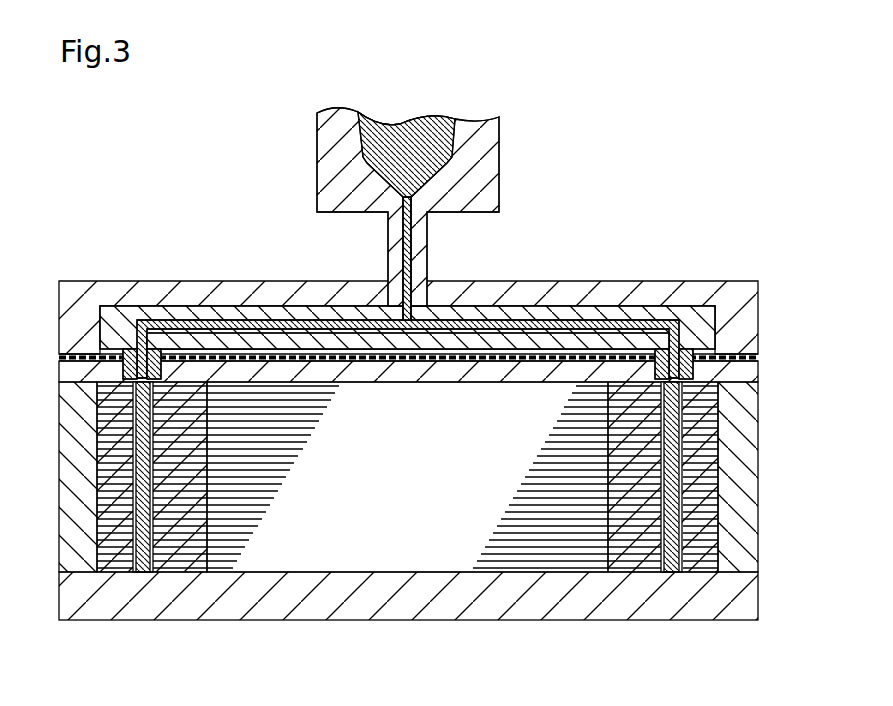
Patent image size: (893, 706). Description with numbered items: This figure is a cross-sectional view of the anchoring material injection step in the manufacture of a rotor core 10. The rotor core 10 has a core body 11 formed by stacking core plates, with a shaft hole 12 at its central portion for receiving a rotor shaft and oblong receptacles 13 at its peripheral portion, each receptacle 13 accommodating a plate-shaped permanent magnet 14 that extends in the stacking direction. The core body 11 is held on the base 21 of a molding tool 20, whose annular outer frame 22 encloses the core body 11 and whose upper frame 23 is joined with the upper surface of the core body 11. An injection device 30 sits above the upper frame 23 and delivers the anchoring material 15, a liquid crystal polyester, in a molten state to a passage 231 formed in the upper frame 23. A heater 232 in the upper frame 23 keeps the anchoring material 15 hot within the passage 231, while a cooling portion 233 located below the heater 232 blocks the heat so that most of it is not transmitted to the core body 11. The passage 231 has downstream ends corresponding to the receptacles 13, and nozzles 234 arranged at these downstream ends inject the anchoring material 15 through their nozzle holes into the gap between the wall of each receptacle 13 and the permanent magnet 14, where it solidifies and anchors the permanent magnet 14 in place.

The rotor core 10 is at (521, 582).
The core body 11 is at (724, 416).
The shaft hole 12 is at (212, 550).
The receptacle 13 is at (130, 396).
The permanent magnet 14 is at (142, 563).
The anchoring material 15 is at (414, 121).
The molding tool 20 is at (297, 281).
The base 21 is at (388, 610).
The outer frame 22 is at (68, 443).
The upper frame 23 is at (168, 281).
The passage 231 is at (433, 282).
The heater 232 is at (689, 312).
The cooling portion 233 is at (458, 362).
The nozzle 234 is at (130, 342).
The injection device 30 is at (500, 157).